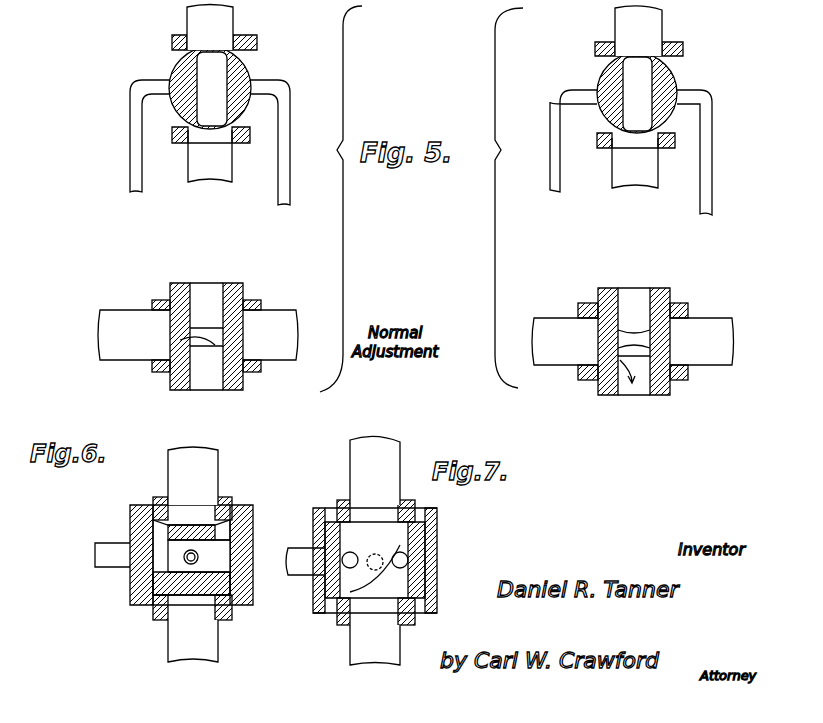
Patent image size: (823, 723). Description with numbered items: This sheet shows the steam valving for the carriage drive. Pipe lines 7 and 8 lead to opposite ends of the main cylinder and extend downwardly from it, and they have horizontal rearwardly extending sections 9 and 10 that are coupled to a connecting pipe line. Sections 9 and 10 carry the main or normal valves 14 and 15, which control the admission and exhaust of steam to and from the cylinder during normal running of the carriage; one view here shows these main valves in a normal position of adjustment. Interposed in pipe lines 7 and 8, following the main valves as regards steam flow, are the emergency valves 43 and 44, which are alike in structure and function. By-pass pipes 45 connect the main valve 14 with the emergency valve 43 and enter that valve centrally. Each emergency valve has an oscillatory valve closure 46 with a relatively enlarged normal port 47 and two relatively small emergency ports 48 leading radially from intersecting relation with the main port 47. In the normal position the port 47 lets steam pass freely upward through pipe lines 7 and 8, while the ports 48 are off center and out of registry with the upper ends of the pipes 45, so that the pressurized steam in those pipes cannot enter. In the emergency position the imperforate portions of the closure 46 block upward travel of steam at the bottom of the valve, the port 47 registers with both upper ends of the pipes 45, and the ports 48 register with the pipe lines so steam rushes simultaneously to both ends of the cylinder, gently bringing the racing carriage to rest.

In FIG. 5, the pipe line 7 is at (235, 24).
In FIG. 6, the pipe line 7 is at (198, 456).
In FIG. 7, the pipe line 7 is at (378, 446).
In FIG. 5, the pipe line 8 is at (654, 26).
In FIG. 5, the horizontal rearwardly extending section 9 is at (114, 318).
In FIG. 5, the horizontal rearwardly extending section 10 is at (550, 320).
In FIG. 5, the main valve 14 is at (238, 298).
In FIG. 5, the main valve 15 is at (680, 300).
In FIG. 5, the emergency valve 43 is at (170, 70).
In FIG. 6, the emergency valve 43 is at (169, 552).
In FIG. 7, the emergency valve 43 is at (364, 544).
In FIG. 5, the emergency valve 44 is at (598, 70).
In FIG. 5, the by-pass pipes 45 is at (128, 155).
In FIG. 6, the by-pass pipes 45 is at (200, 560).
In FIG. 7, the by-pass pipes 45 is at (372, 552).
In FIG. 5, the oscillatory valve closure 46 is at (238, 72).
In FIG. 6, the oscillatory valve closure 46 is at (130, 590).
In FIG. 7, the oscillatory valve closure 46 is at (437, 580).
In FIG. 5, the normal port 47 is at (215, 80).
In FIG. 6, the normal port 47 is at (215, 555).
In FIG. 7, the normal port 47 is at (325, 538).
In FIG. 6, the emergency ports 48 is at (160, 523).
In FIG. 7, the emergency ports 48 is at (322, 592).